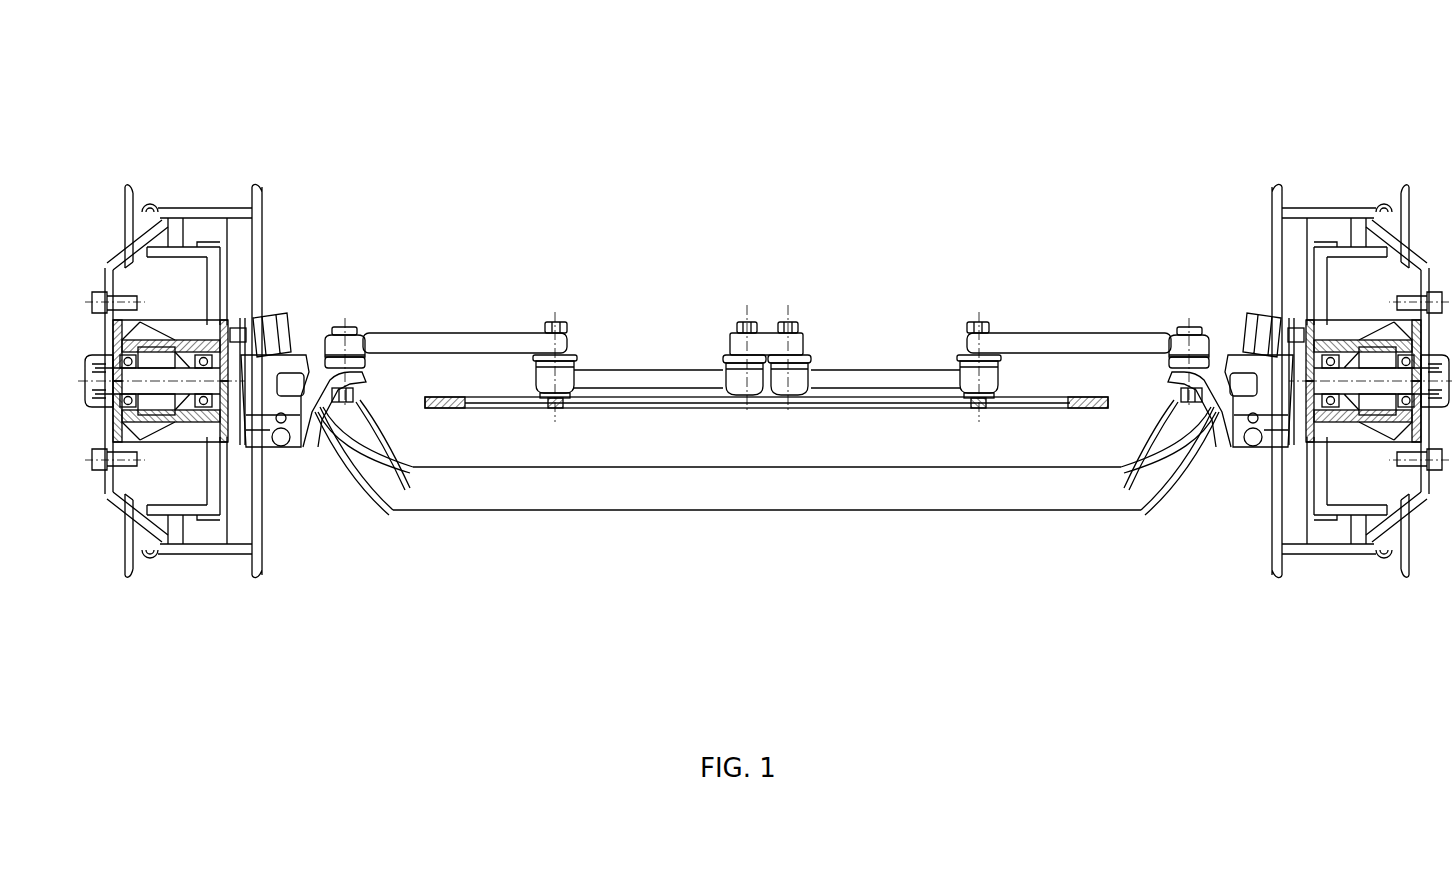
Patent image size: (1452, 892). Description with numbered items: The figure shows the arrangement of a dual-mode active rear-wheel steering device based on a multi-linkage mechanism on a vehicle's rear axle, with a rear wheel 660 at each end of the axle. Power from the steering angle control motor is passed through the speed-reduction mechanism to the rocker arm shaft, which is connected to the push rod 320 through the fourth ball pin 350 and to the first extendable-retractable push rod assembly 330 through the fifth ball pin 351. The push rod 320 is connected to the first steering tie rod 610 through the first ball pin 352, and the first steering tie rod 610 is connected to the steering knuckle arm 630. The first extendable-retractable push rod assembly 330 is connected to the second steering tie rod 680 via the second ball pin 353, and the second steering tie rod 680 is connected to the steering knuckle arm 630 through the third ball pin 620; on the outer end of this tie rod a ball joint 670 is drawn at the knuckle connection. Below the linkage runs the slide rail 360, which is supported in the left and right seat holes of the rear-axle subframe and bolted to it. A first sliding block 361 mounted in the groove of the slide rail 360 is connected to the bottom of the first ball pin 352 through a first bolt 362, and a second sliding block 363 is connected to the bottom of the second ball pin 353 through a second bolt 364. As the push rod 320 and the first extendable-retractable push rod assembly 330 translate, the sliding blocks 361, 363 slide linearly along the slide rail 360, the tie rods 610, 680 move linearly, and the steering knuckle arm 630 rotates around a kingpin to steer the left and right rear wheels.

The wheel assembly 660 is at (168, 212).
The steering knuckle arm 630 is at (298, 360).
The third ball pin 620 is at (350, 345).
The first steering tie rod 610 is at (453, 347).
The first ball pin 352 is at (565, 370).
The push rod 320 is at (628, 377).
The fourth ball pin 350 is at (752, 320).
The fifth ball pin 351 is at (798, 322).
The first extendable-retractable push rod assembly 330 is at (820, 375).
The second ball pin 353 is at (982, 320).
The second steering tie rod 680 is at (1032, 340).
The second ball joint 670 is at (1192, 342).
The slide rail 360 is at (437, 407).
The first sliding block 361 is at (545, 408).
The first bolt 362 is at (552, 406).
The second sliding block 363 is at (968, 407).
The second bolt 364 is at (977, 408).